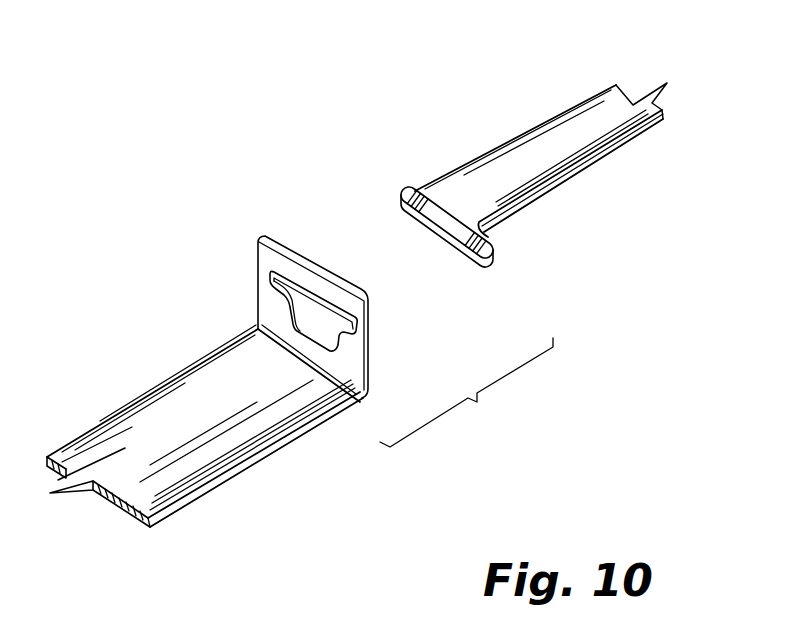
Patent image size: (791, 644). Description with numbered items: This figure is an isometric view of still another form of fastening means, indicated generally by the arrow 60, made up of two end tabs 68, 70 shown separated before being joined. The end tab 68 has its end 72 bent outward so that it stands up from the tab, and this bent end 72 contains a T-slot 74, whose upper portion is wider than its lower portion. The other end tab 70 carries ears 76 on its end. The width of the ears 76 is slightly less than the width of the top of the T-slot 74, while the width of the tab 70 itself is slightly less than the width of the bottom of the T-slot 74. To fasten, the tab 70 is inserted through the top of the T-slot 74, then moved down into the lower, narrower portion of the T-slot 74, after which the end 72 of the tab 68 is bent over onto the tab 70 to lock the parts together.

The connector assembly 60 is at (246, 189).
The end tab 68 is at (110, 419).
The end tab 70 is at (538, 128).
The end 72 is at (262, 258).
The T-slot 74 is at (290, 298).
The ears 76 is at (400, 199).